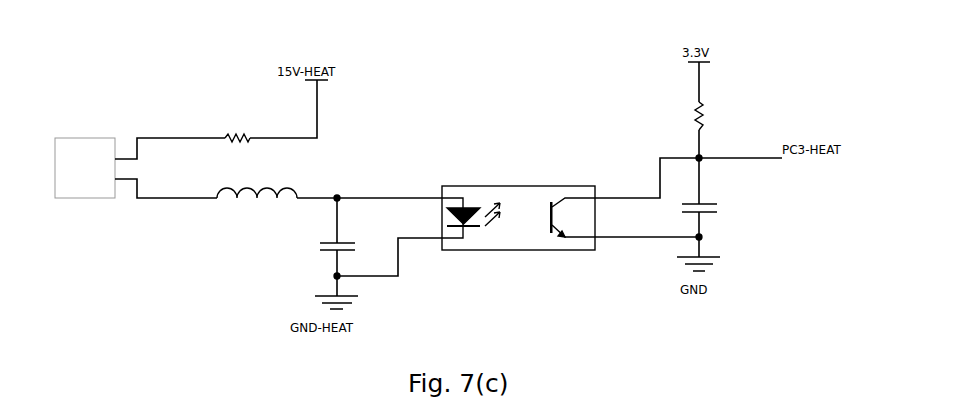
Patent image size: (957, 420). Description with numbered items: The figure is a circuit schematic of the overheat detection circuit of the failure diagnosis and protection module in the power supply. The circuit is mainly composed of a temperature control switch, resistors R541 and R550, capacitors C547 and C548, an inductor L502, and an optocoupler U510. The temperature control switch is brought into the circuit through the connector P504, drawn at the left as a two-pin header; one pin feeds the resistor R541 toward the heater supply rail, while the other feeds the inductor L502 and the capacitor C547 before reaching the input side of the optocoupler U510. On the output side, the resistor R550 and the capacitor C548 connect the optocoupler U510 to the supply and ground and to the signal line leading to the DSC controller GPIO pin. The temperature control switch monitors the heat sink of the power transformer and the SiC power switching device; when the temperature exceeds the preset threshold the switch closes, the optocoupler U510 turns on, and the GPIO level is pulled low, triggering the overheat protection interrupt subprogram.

The connector P504 is at (85, 170).
The resistor R541 is at (232, 130).
The inductor L502 is at (257, 185).
The capacitor C547 is at (354, 247).
The optocoupler U510 is at (519, 218).
The resistor R550 is at (716, 115).
The capacitor C548 is at (715, 207).